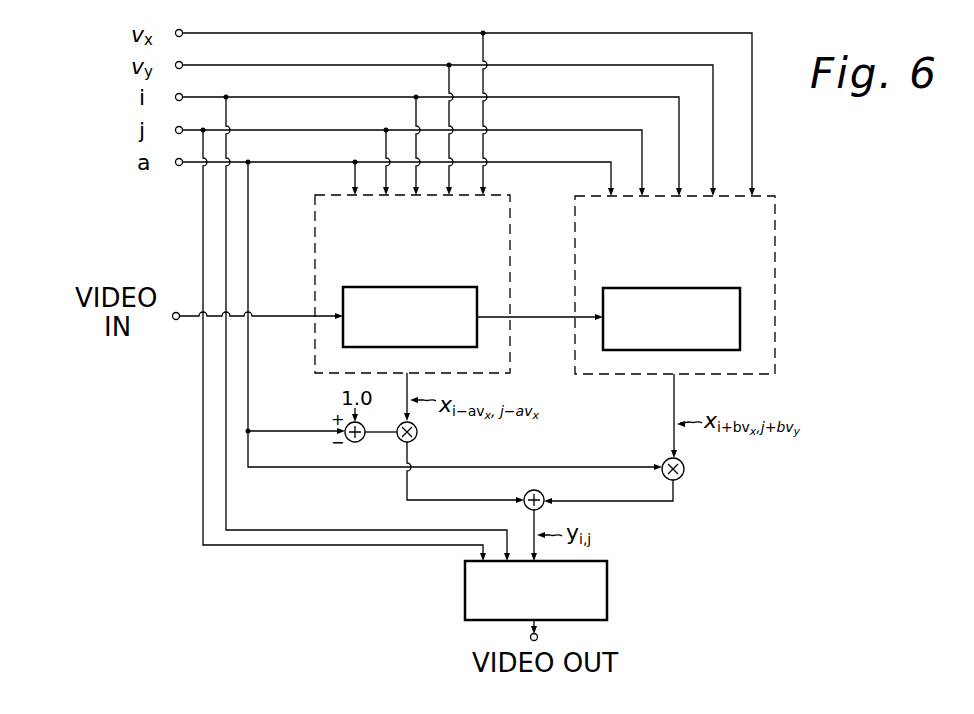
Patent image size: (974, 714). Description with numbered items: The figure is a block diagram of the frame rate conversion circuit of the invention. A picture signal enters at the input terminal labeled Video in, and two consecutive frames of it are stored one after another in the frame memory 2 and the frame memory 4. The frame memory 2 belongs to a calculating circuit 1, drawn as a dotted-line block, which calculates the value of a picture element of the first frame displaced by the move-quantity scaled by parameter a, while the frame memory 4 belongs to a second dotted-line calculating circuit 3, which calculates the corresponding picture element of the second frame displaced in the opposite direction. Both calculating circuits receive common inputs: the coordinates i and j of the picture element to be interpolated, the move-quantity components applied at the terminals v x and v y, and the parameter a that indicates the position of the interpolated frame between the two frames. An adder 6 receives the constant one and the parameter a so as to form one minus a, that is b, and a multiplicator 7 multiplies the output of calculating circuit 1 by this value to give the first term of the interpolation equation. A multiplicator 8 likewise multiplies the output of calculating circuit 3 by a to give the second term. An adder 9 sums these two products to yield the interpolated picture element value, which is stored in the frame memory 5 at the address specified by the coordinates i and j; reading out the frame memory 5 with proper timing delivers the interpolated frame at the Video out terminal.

The calculating circuit 1 is at (510, 195).
The frame memory 2 is at (472, 287).
The calculating circuit 3 is at (775, 196).
The frame memory 4 is at (735, 288).
The frame memory 5 is at (607, 583).
The adder 6 is at (361, 440).
The multiplicator 7 is at (415, 439).
The multiplicator 8 is at (682, 477).
The adder 9 is at (543, 494).